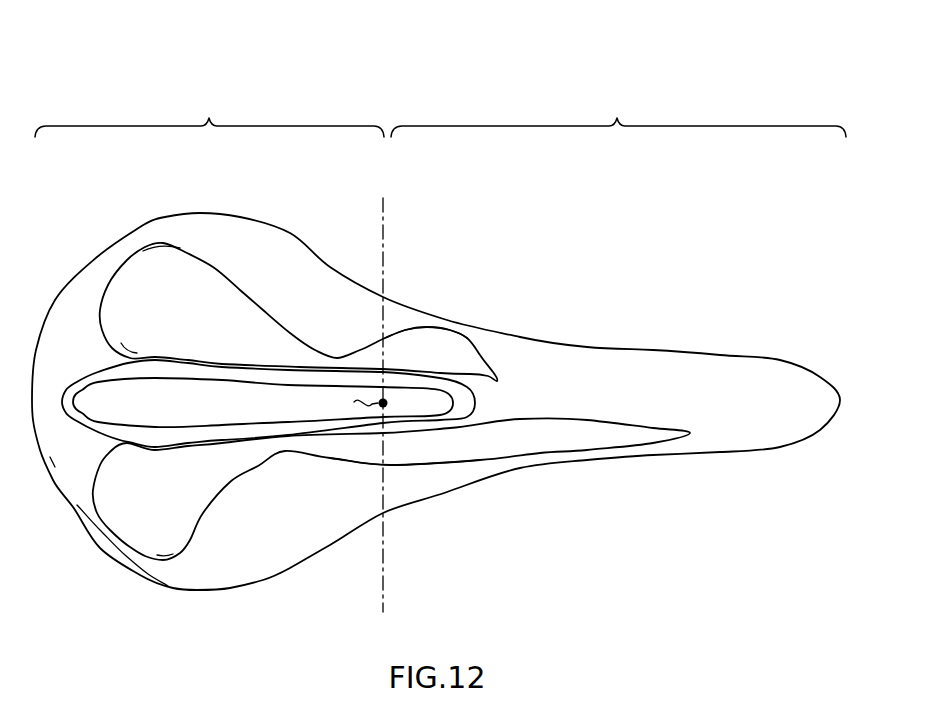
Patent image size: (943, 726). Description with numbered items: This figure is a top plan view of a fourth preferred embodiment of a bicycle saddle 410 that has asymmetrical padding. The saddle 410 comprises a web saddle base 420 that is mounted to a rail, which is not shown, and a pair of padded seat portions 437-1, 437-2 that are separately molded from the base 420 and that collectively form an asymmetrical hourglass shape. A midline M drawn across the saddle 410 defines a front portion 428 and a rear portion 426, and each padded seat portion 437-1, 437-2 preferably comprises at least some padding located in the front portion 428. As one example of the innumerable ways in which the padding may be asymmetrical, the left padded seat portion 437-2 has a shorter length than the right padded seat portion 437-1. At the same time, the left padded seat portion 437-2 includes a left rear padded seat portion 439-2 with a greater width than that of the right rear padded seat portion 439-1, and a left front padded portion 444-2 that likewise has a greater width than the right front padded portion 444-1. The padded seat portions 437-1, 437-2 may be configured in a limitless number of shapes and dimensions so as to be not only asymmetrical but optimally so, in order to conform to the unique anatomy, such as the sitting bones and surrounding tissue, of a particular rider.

The saddle 410 is at (60, 49).
The web saddle base 420 is at (710, 363).
The rear portion 426 is at (209, 115).
The front portion 428 is at (618, 115).
The right padded seat portion 437-1 is at (190, 541).
The left padded seat portion 437-2 is at (193, 265).
The right rear padded seat portion 439-1 is at (123, 537).
The left rear padded seat portion 439-2 is at (123, 267).
The right front padded portion 444-1 is at (443, 467).
The left front padded portion 444-2 is at (443, 326).